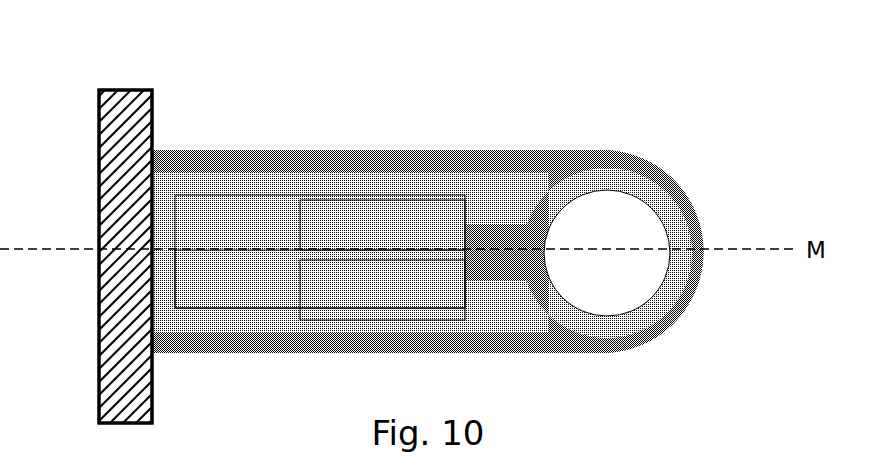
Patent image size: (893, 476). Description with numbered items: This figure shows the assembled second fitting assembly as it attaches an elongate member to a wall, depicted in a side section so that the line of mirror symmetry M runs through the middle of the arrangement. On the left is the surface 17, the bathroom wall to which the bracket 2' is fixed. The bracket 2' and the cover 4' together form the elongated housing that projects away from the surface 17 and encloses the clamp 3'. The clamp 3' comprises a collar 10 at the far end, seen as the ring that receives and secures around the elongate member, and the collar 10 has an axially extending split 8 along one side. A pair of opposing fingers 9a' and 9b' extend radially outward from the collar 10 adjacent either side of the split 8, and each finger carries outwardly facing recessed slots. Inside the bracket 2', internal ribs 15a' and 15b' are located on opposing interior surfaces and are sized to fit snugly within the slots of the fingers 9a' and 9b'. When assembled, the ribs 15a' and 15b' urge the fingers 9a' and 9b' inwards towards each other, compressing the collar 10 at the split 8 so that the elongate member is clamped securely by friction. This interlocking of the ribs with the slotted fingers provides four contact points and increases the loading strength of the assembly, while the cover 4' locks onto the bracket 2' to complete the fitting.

The surface 17 is at (123, 90).
The bracket 2' is at (422, 210).
The internal rib 15b' is at (320, 177).
The internal rib 15a' is at (320, 187).
The cover 4' is at (428, 208).
The finger 9a' is at (382, 153).
The finger 9b' is at (403, 194).
The clamp 3' is at (520, 170).
The split 8 is at (541, 250).
The collar 10 is at (661, 192).